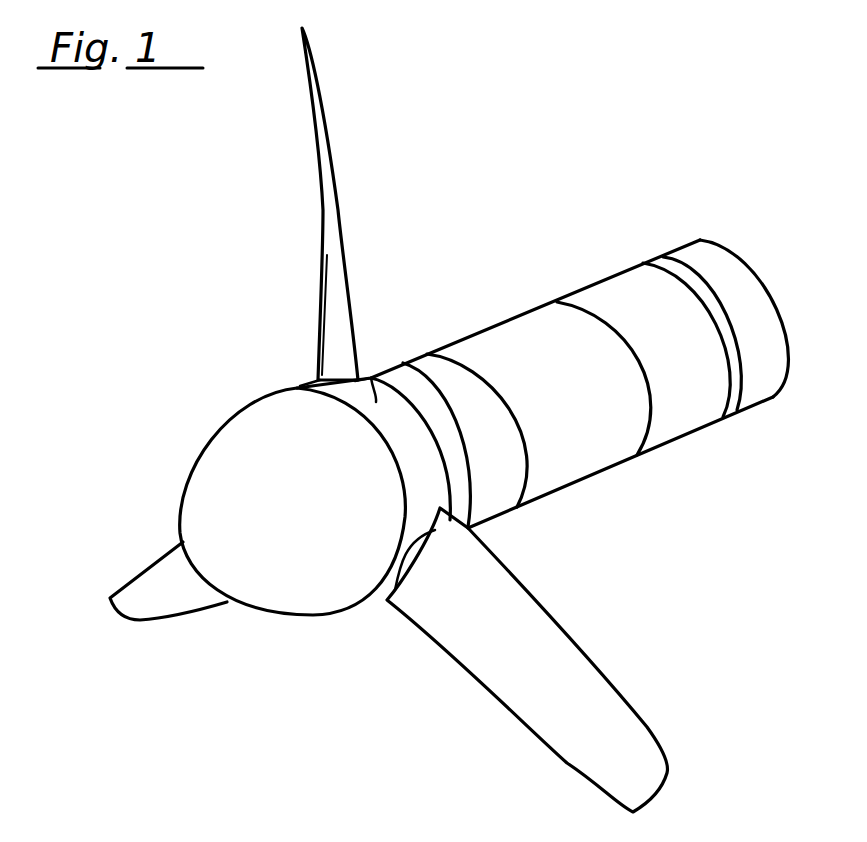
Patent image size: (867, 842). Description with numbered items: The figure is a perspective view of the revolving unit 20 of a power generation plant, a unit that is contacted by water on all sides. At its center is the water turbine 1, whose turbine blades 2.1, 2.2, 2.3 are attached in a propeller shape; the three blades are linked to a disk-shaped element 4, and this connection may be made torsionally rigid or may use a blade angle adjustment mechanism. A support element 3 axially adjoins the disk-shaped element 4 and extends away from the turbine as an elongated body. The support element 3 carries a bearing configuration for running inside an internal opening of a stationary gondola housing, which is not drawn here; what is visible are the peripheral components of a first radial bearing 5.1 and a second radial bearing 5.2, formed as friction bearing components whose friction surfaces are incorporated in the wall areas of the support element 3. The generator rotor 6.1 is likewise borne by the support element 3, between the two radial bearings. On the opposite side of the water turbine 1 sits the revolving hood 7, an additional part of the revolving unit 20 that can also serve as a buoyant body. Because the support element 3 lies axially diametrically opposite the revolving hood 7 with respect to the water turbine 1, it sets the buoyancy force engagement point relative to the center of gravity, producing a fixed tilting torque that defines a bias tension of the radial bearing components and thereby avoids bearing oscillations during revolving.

The water turbine 1 is at (415, 673).
The revolving unit 20 is at (527, 157).
The turbine blade 2.1 is at (560, 662).
The turbine blade 2.2 is at (323, 98).
The turbine blade 2.3 is at (160, 615).
The support element 3 is at (595, 437).
The disk-shaped element 4 is at (370, 377).
The first radial bearing 5.1 is at (437, 373).
The second radial bearing 5.2 is at (698, 260).
The generator rotor 6.1 is at (637, 290).
The revolving hood 7 is at (300, 592).